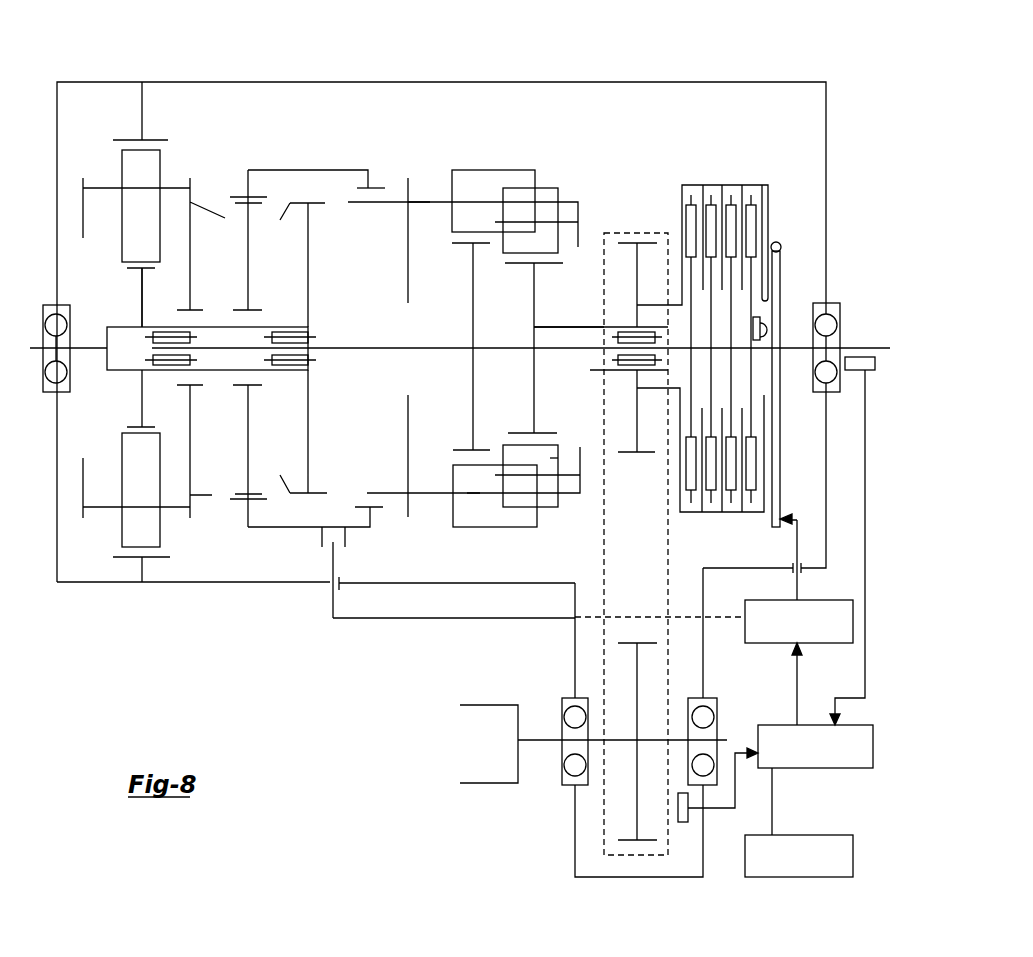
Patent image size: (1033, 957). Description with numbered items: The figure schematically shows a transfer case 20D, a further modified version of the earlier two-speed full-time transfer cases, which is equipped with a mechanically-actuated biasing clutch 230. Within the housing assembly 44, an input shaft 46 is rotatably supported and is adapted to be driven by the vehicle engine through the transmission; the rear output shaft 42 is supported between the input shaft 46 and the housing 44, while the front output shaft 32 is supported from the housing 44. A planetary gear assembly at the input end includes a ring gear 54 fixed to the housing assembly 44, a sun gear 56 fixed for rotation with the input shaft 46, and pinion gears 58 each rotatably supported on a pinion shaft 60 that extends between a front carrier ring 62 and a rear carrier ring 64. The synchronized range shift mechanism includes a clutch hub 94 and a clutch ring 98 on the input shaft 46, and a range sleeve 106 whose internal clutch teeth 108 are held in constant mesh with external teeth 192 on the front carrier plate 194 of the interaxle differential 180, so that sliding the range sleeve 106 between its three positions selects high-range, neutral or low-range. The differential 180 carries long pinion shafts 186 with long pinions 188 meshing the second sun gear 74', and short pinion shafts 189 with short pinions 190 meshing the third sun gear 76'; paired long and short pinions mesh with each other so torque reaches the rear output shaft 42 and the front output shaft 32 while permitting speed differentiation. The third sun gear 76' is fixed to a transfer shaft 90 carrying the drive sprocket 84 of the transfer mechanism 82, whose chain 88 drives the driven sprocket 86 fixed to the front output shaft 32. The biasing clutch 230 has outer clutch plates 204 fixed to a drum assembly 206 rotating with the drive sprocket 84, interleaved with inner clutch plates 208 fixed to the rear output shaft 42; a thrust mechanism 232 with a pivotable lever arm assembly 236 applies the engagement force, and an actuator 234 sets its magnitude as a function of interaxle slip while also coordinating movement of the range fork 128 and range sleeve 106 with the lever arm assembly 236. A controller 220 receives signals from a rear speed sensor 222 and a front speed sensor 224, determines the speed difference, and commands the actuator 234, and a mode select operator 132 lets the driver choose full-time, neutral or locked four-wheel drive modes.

The transfer case 20D is at (714, 52).
The housing assembly 44 is at (807, 82).
The input shaft 46 is at (88, 352).
The front carrier ring 62 is at (83, 212).
The ring gear 54 is at (146, 136).
The pinion gears 58 is at (152, 165).
The pinion shaft 60 is at (98, 186).
The sun gear 56 is at (142, 293).
The rear carrier ring 64 is at (193, 248).
The clutch hub 94 is at (250, 262).
The clutch ring 98 is at (310, 286).
The range sleeve 106 is at (290, 170).
The internal clutch teeth 108 is at (397, 190).
The external teeth 192 is at (348, 202).
The long pinion shafts 186 is at (418, 202).
The front carrier plate 194 is at (408, 290).
The second sun gear 74' is at (460, 346).
The third sun gear 76' is at (548, 348).
The interaxle differential 180 is at (510, 155).
The long pinions 188 is at (478, 165).
The short pinion shafts 189 is at (565, 475).
The short pinions 190 is at (550, 458).
The chain 88 is at (603, 470).
The transfer mechanism 82 is at (678, 586).
The drive sprocket 84 is at (622, 280).
The transfer shaft 90 is at (600, 330).
The driven sprocket 86 is at (637, 665).
The biasing clutch 230 is at (738, 157).
The drum assembly 206 is at (708, 178).
The outer clutch plates 204 is at (748, 190).
The inner clutch plates 208 is at (752, 427).
The thrust mechanism 232 is at (786, 288).
The lever arm assembly 236 is at (780, 505).
The rear output shaft 42 is at (790, 348).
The rear speed sensor 222 is at (873, 370).
The range fork 128 is at (335, 557).
The front output shaft 32 is at (545, 745).
The front speed sensor 224 is at (683, 822).
The actuator 234 is at (825, 645).
The controller 220 is at (830, 769).
The mode select operator 132 is at (853, 859).